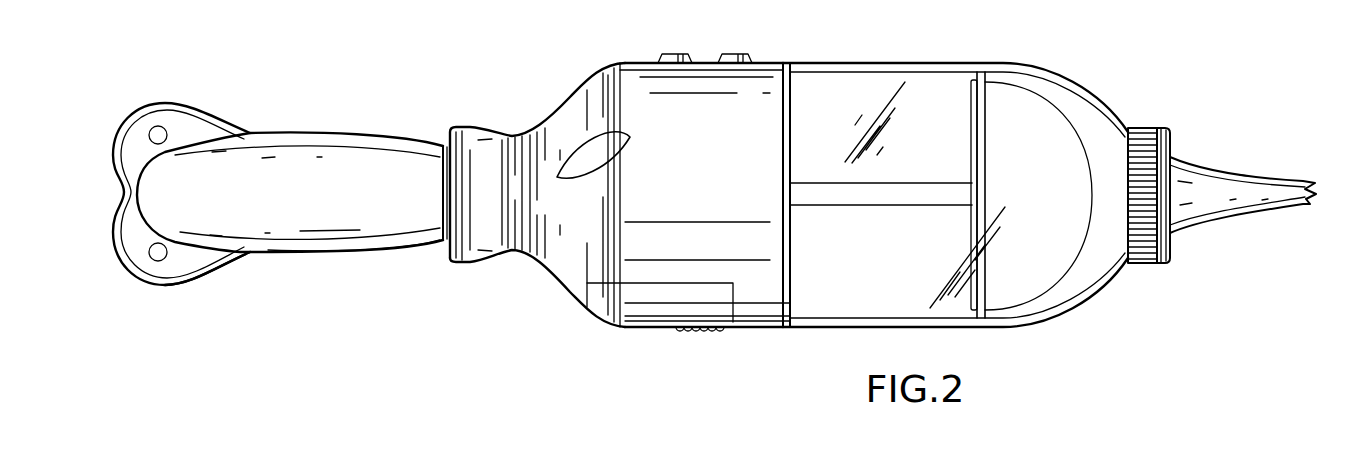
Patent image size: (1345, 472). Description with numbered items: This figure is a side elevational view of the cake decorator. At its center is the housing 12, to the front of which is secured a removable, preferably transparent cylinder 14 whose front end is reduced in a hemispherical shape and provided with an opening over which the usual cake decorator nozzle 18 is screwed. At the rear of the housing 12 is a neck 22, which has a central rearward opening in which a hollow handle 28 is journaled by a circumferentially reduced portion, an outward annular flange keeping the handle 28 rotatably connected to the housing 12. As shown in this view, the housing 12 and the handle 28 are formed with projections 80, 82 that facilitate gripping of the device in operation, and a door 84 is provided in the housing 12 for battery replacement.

The housing 12 is at (600, 80).
The cylinder 14 is at (938, 62).
The cake decorator nozzle 18 is at (1200, 172).
The neck 22 is at (497, 130).
The hollow handle 28 is at (360, 132).
The projection 80 is at (184, 107).
The projection 82 is at (185, 277).
The door 84 is at (673, 308).